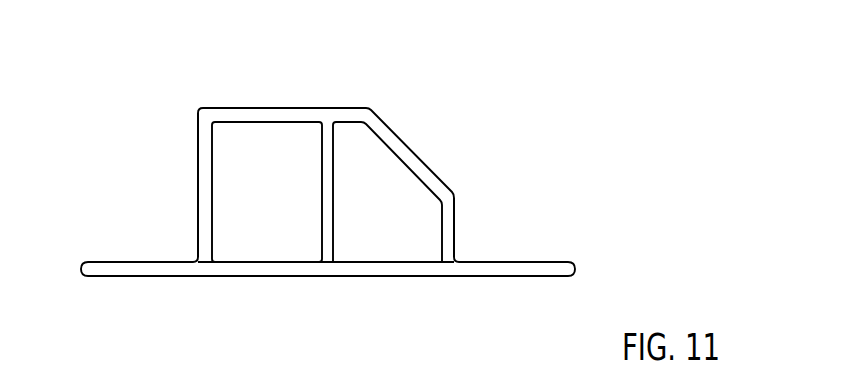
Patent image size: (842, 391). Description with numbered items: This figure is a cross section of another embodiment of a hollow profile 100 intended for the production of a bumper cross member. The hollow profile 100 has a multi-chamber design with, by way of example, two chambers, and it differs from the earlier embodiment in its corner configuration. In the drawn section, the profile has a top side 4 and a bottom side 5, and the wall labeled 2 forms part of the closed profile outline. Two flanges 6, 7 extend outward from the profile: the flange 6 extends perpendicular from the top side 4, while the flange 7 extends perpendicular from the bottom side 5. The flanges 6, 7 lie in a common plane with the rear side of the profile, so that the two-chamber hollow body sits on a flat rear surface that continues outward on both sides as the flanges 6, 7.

The hollow profile 100 is at (424, 158).
The top wall 2 is at (304, 110).
The top side 4 is at (203, 178).
The bottom side 5 is at (452, 223).
The flange 6 is at (135, 268).
The flange 7 is at (532, 264).